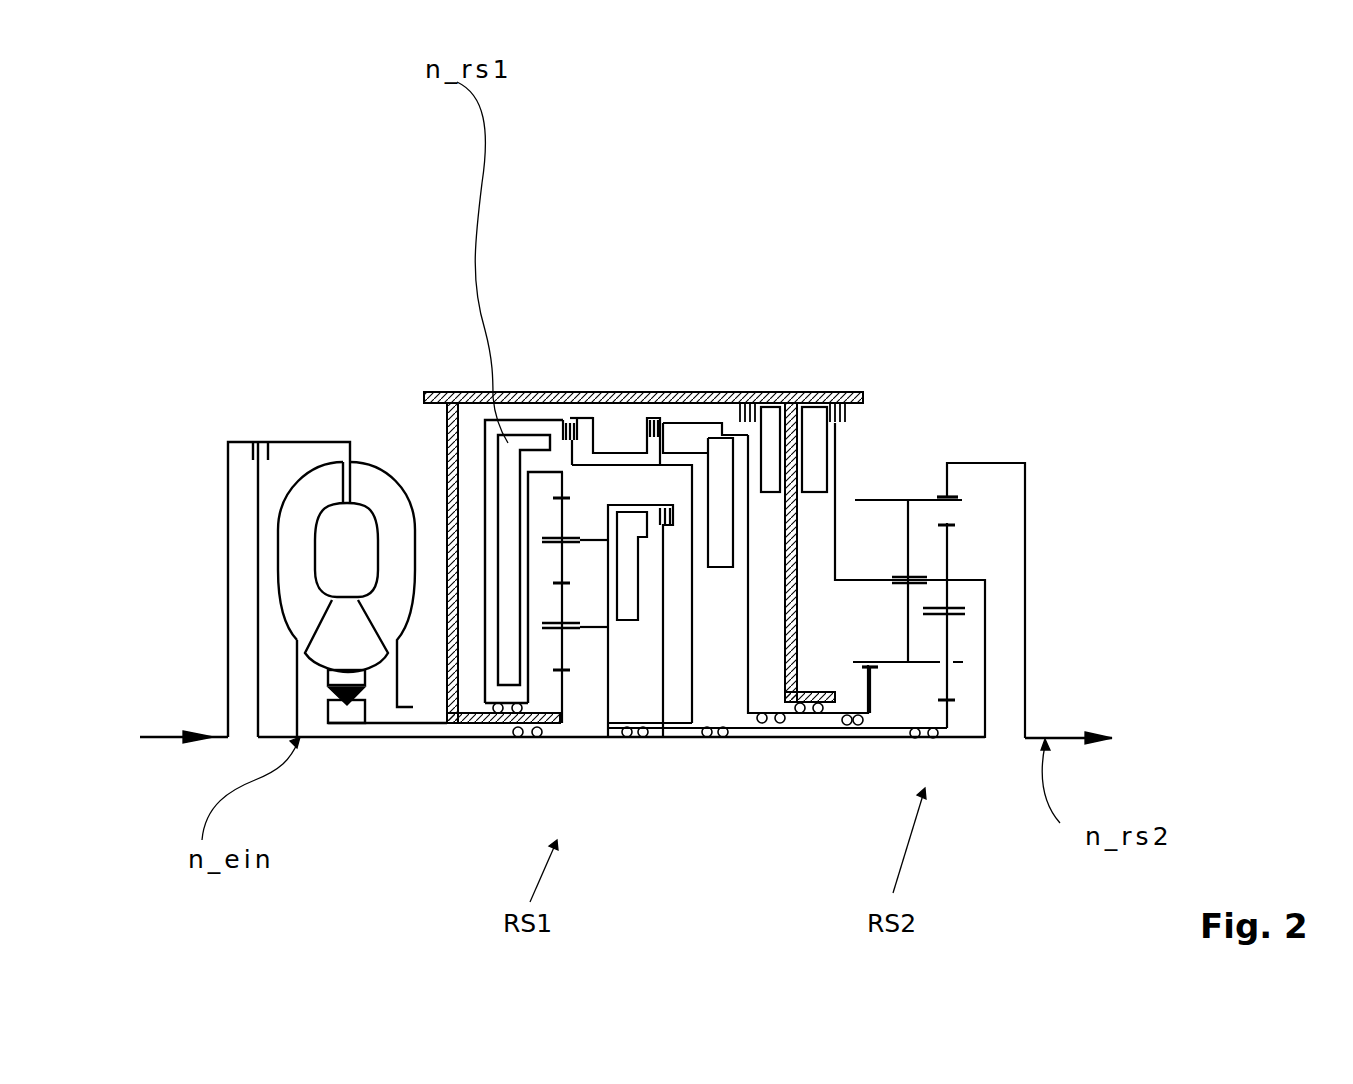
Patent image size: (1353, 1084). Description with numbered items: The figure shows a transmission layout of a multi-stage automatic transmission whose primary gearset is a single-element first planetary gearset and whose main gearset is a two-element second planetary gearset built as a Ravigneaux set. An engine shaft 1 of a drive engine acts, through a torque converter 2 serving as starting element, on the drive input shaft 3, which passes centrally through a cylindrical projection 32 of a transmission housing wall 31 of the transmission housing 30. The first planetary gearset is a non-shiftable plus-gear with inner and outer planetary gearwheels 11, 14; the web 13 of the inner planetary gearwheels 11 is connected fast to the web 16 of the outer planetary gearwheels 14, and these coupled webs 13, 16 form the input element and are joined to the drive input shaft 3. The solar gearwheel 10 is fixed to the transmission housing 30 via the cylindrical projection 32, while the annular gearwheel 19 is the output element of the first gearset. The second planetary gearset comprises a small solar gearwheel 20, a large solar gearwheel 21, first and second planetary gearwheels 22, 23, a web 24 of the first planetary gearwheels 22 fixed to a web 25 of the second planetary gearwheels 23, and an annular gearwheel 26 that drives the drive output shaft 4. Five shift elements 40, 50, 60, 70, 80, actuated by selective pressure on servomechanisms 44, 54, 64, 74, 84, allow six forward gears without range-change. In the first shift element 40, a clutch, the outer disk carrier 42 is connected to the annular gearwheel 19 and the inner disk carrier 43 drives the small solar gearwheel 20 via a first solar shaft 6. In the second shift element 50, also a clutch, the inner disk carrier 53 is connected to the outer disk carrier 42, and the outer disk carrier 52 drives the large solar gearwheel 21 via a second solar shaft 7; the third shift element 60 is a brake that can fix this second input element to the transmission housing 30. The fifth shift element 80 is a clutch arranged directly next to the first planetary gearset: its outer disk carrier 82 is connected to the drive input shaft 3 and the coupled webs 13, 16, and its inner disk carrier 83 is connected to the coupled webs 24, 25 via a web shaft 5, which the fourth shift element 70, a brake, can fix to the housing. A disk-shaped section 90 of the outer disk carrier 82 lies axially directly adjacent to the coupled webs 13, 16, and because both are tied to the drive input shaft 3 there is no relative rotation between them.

The engine shaft 1 is at (163, 737).
The torque converter 2 is at (377, 485).
The drive input shaft 3 is at (363, 738).
The drive output shaft 4 is at (1070, 738).
The web shaft 5 is at (783, 740).
The first solar shaft 6 is at (810, 728).
The second solar shaft 7 is at (868, 713).
The solar gearwheel 10 is at (565, 712).
The inner planetary gearwheels 11 is at (563, 653).
The web of the inner planetary gearwheels 13 is at (612, 535).
The outer planetary gearwheels 14 is at (560, 568).
The web of the outer planetary gearwheels 16 is at (582, 538).
The annular gearwheel 19 is at (565, 483).
The small solar gearwheel 20 is at (947, 716).
The large solar gearwheel 21 is at (897, 738).
The first planetary gearwheels 22 is at (948, 542).
The second planetary gearwheels 23 is at (912, 517).
The web of the first planetary gearwheels 24 is at (978, 612).
The web of the second planetary gearwheels 25 is at (967, 580).
The annular gearwheel 26 is at (948, 478).
The transmission housing 30 is at (440, 392).
The transmission housing wall 31 is at (445, 520).
The cylindrical projection 32 is at (503, 738).
The first shift element 40 is at (573, 425).
The outer disk carrier 42 is at (539, 460).
The inner disk carrier 43 is at (585, 470).
The servomechanism 44 is at (453, 388).
The second shift element 50 is at (633, 412).
The outer disk carrier 52 is at (675, 425).
The inner disk carrier 53 is at (617, 450).
The servomechanism 54 is at (688, 505).
The third shift element 60 is at (757, 400).
The servomechanism 64 is at (772, 455).
The fourth shift element 70 is at (818, 448).
The servomechanism 74 is at (868, 408).
The fifth shift element 80 is at (748, 392).
The outer disk carrier 82 is at (644, 497).
The inner disk carrier 83 is at (673, 545).
The servomechanism 84 is at (647, 513).
The disk-shaped section 90 is at (648, 690).